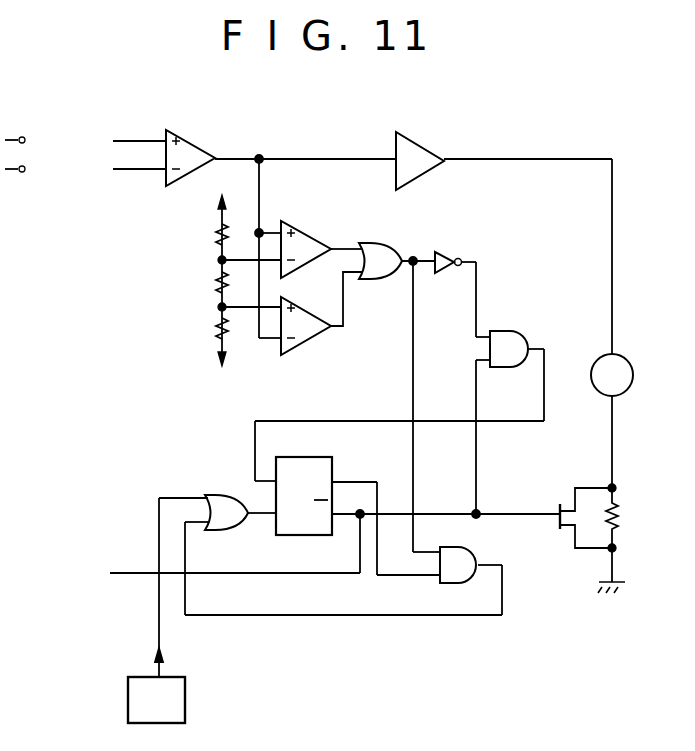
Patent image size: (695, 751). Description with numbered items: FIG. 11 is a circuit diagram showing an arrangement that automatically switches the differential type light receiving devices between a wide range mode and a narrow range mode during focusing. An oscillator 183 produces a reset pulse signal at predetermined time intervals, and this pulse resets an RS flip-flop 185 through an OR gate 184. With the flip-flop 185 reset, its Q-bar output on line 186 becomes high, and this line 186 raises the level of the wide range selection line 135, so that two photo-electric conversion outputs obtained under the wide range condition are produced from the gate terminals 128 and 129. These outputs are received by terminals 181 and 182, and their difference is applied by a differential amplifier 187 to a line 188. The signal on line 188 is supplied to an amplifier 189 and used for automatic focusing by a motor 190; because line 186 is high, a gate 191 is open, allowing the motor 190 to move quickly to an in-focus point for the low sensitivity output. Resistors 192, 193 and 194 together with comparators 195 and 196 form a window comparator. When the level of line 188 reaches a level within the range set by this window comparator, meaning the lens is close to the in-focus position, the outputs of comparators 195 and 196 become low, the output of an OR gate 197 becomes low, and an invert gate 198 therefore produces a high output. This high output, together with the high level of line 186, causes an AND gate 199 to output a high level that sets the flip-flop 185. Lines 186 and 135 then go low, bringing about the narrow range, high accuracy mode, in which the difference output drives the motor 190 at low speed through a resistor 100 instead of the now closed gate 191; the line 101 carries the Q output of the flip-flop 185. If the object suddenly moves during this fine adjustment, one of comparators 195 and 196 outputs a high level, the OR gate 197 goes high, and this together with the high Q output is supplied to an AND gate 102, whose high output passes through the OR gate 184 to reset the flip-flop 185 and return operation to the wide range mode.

The resistor 100 is at (616, 521).
The Q output line 101 is at (392, 578).
The AND gate 102 is at (480, 547).
The gate terminal 128 is at (86, 140).
The gate terminal 129 is at (86, 169).
The wide range selection line 135 is at (220, 568).
The terminal 181 is at (126, 141).
The terminal 182 is at (126, 170).
The oscillator 183 is at (188, 691).
The OR gate 184 is at (215, 494).
The RS flip-flop 185 is at (335, 467).
The line 186 is at (435, 510).
The differential amplifier 187 is at (196, 136).
The line 188 is at (312, 157).
The amplifier 189 is at (418, 143).
The motor 190 is at (597, 356).
The gate 191 is at (560, 508).
The resistor 192 is at (216, 238).
The resistor 193 is at (216, 285).
The resistor 194 is at (216, 333).
The comparator 195 is at (305, 226).
The comparator 196 is at (318, 344).
The OR gate 197 is at (375, 282).
The invert gate 198 is at (440, 275).
The AND gate 199 is at (505, 330).